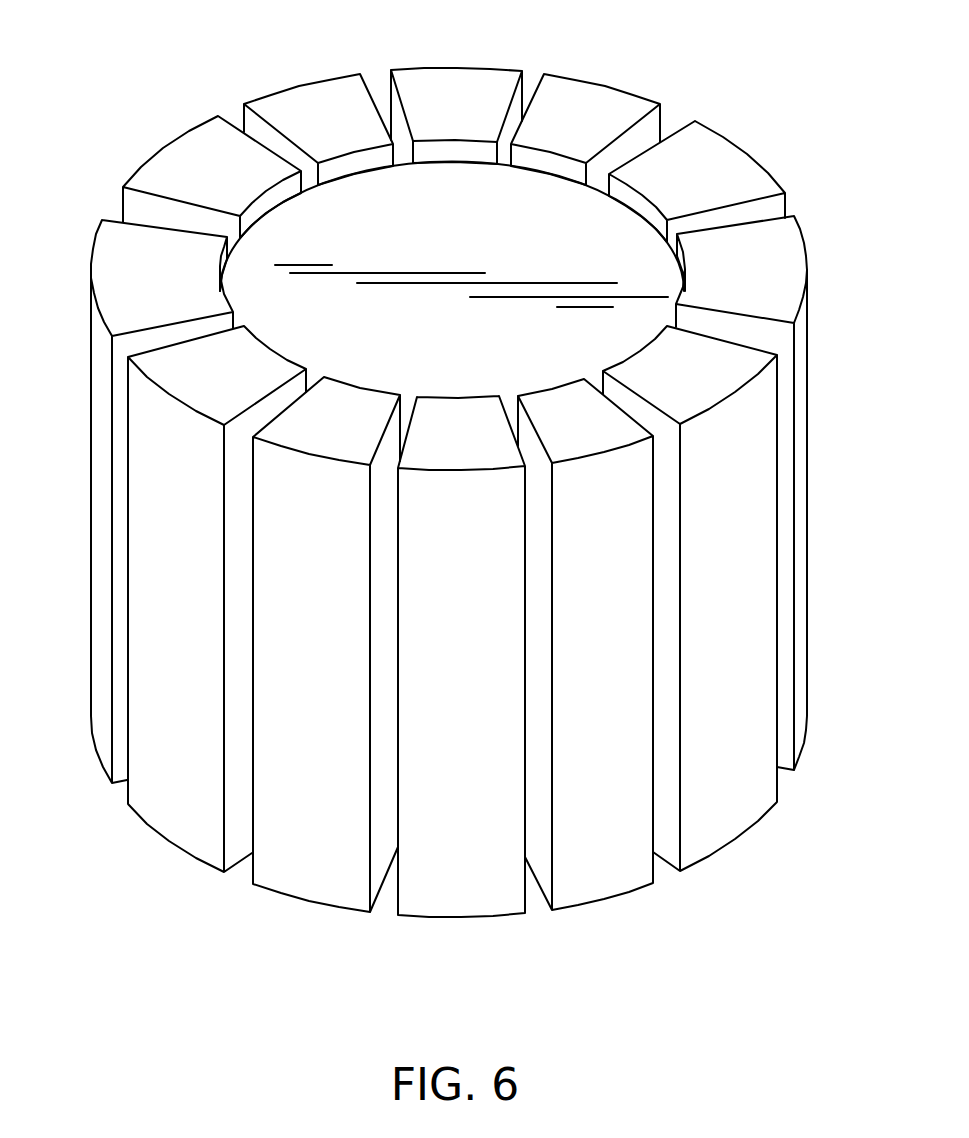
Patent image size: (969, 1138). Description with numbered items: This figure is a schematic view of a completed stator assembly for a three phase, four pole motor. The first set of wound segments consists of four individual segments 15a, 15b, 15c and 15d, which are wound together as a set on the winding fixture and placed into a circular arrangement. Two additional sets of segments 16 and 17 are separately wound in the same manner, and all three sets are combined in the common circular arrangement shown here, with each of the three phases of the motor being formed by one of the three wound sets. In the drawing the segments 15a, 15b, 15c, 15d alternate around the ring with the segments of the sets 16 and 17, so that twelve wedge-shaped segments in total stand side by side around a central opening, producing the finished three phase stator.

The segment 15a is at (185, 818).
The segment 15b is at (612, 880).
The segment 15c is at (749, 167).
The segment 15d is at (305, 95).
The set of segments 16 is at (178, 162).
The set of segments 17 is at (452, 77).